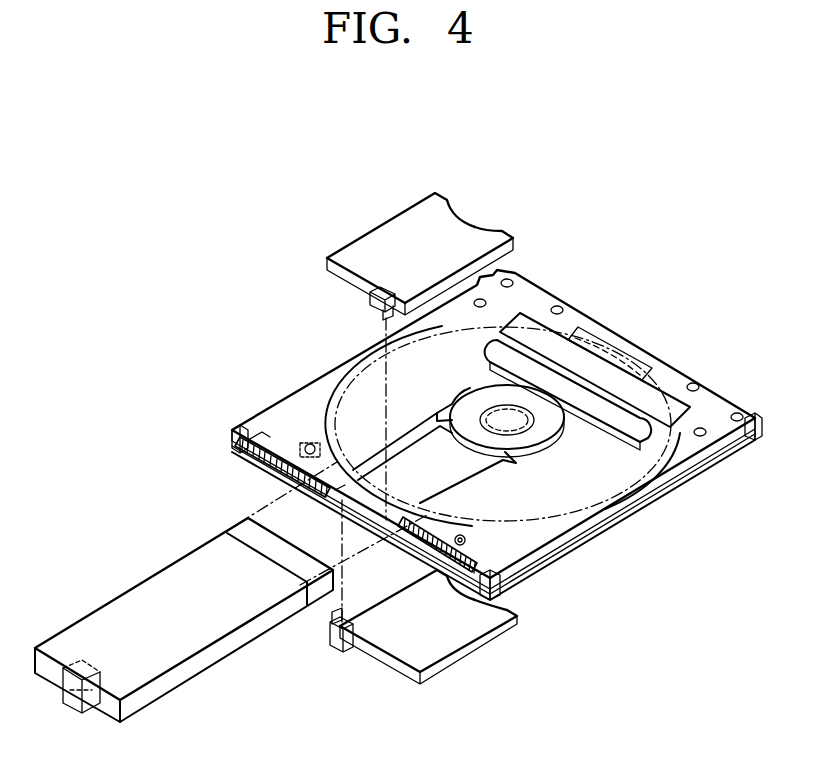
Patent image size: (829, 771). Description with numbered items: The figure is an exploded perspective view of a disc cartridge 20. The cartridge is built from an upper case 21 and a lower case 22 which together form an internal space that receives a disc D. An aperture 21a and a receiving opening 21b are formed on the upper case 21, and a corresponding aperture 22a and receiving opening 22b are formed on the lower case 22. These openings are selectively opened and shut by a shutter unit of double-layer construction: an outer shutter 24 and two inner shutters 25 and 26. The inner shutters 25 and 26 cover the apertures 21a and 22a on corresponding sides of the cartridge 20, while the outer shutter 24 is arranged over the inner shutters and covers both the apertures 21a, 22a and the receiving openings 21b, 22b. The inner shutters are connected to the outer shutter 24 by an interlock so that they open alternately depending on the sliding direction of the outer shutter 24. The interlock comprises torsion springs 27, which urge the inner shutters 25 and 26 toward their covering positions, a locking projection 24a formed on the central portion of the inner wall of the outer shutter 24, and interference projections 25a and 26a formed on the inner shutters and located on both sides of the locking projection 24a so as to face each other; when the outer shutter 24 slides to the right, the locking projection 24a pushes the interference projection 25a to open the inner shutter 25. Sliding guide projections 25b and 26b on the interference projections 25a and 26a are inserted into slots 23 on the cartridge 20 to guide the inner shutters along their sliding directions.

The disc cartridge 20 is at (214, 306).
The upper case 21 is at (697, 467).
The aperture 21a is at (392, 444).
The receiving opening 21b is at (452, 404).
The lower case 22 is at (668, 492).
The aperture 22a is at (418, 441).
The receiving opening 22b is at (474, 410).
The slots 23 is at (292, 478).
The outer shutter 24 is at (148, 588).
The locking projection 24a is at (78, 668).
The inner shutter 25 is at (395, 233).
The interference projection 25a is at (368, 300).
The sliding guide projection 25b is at (378, 314).
The inner shutter 26 is at (450, 650).
The interference projection 26a is at (337, 648).
The sliding guide projection 26b is at (330, 627).
The torsion springs 27 is at (305, 445).
The disc D is at (613, 490).